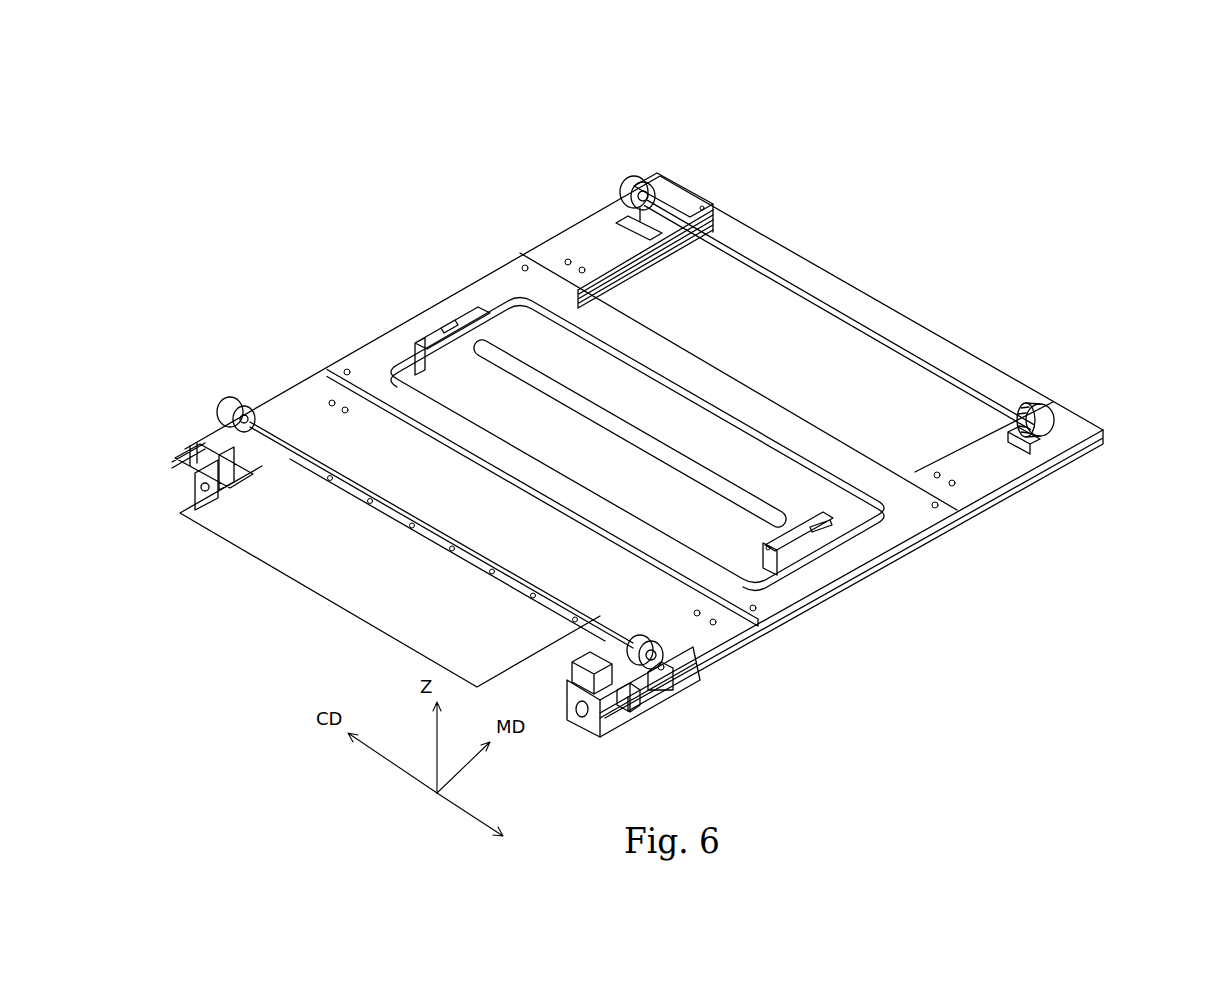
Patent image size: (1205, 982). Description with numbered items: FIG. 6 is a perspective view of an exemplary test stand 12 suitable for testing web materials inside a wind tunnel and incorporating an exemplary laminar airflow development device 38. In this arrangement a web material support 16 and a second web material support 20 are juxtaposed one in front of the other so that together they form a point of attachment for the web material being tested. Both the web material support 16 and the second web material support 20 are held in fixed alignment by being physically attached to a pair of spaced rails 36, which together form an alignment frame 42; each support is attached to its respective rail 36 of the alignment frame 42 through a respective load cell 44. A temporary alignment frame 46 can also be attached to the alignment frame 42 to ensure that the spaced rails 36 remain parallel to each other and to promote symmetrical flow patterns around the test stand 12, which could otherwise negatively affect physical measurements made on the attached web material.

The test stand 12 is at (866, 178).
The web material support 16 is at (607, 620).
The second web material support 20 is at (988, 393).
The rail 36 is at (577, 242).
The laminar airflow development device 38 is at (495, 627).
The alignment frame 42 is at (957, 583).
The load cell 44 is at (640, 175).
The temporary alignment frame 46 is at (793, 433).